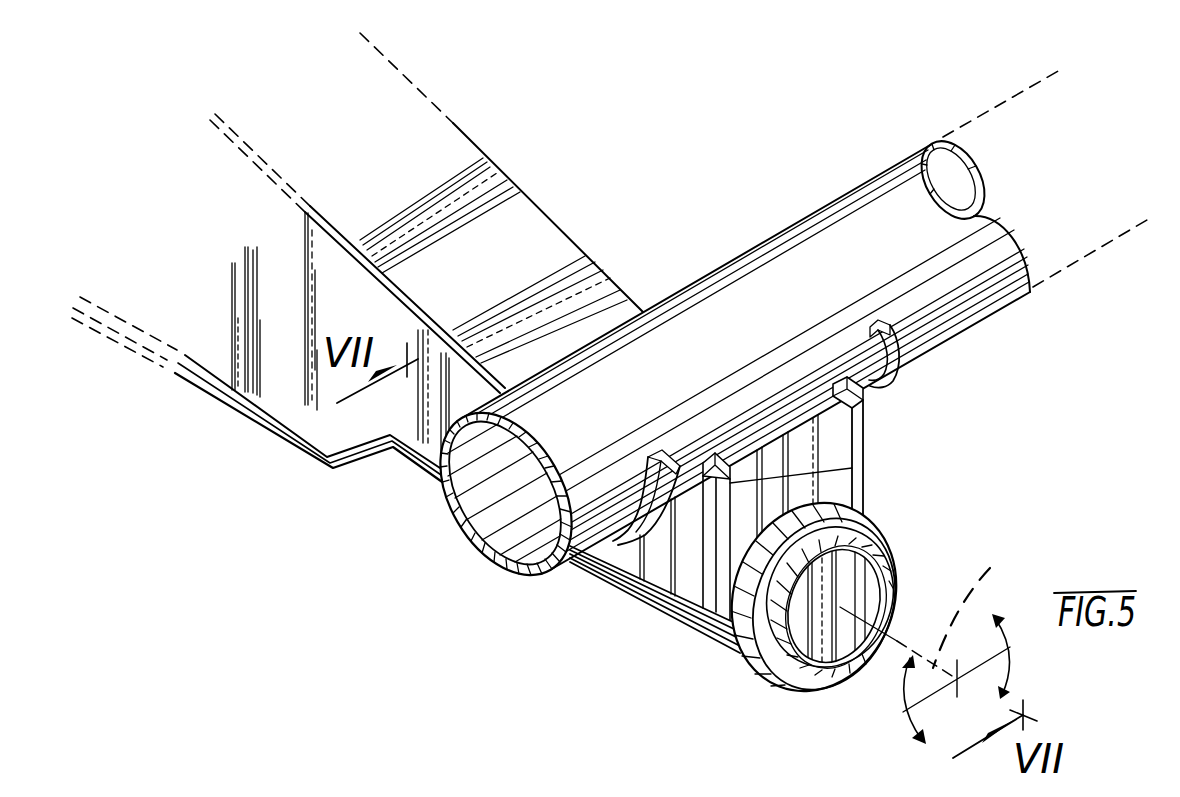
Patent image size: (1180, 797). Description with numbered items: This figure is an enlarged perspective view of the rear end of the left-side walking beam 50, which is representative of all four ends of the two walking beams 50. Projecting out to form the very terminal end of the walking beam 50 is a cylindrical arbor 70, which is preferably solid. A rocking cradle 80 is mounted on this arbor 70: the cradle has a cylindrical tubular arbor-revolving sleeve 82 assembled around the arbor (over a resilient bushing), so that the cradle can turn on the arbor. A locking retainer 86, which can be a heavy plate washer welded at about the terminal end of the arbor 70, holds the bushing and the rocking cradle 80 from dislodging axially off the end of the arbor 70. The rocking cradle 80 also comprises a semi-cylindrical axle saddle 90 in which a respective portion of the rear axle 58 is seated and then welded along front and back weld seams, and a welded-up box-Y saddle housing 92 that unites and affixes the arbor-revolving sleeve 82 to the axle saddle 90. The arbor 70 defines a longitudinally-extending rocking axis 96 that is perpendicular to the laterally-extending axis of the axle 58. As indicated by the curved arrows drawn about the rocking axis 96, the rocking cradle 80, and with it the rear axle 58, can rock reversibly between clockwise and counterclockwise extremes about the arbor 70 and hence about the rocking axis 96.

The walking beam 50 is at (476, 144).
The rear axle 58 is at (830, 201).
The cylindrical arbor 70 is at (848, 645).
The rocking cradle 80 is at (925, 446).
The cylindrical tubular arbor-revolving sleeve 82 is at (640, 595).
The locking retainer 86 is at (766, 567).
The semi-cylindrical axle saddle 90 is at (897, 385).
The box-Y saddle housing 92 is at (868, 443).
The rocking axis 96 is at (970, 626).